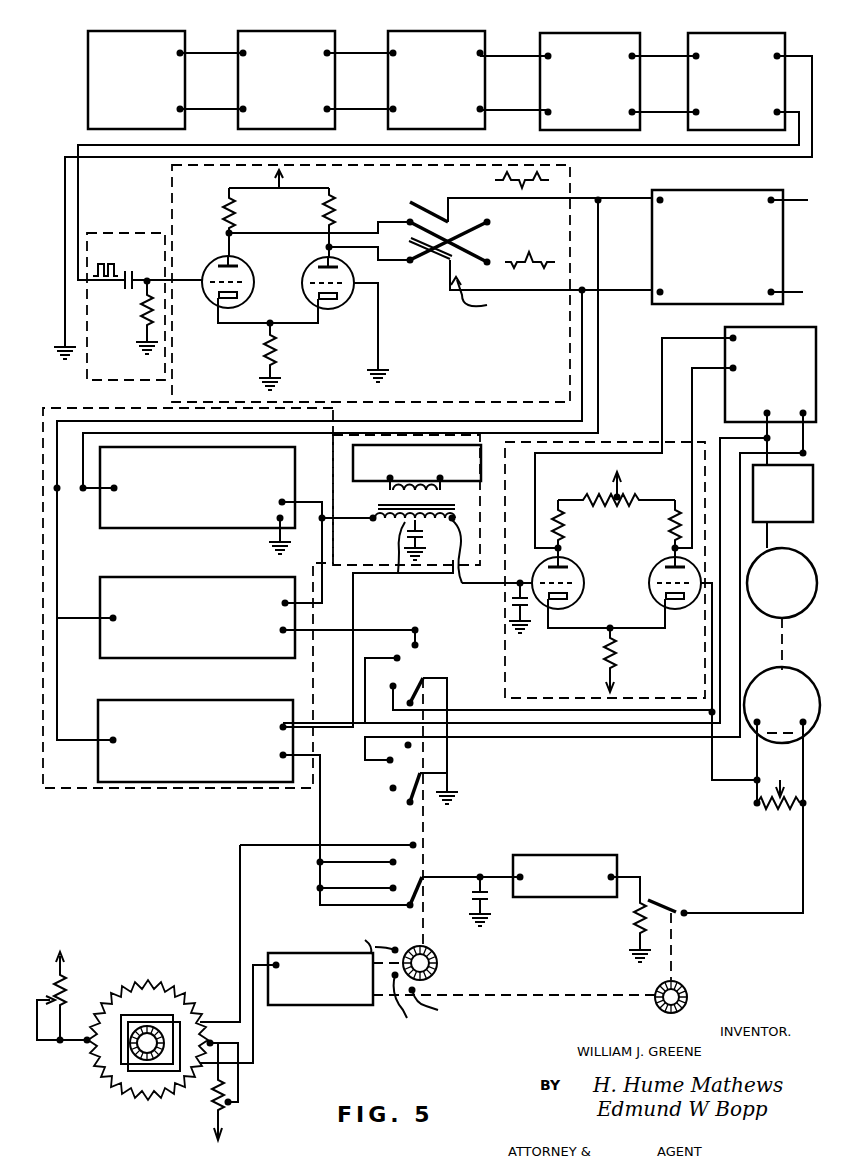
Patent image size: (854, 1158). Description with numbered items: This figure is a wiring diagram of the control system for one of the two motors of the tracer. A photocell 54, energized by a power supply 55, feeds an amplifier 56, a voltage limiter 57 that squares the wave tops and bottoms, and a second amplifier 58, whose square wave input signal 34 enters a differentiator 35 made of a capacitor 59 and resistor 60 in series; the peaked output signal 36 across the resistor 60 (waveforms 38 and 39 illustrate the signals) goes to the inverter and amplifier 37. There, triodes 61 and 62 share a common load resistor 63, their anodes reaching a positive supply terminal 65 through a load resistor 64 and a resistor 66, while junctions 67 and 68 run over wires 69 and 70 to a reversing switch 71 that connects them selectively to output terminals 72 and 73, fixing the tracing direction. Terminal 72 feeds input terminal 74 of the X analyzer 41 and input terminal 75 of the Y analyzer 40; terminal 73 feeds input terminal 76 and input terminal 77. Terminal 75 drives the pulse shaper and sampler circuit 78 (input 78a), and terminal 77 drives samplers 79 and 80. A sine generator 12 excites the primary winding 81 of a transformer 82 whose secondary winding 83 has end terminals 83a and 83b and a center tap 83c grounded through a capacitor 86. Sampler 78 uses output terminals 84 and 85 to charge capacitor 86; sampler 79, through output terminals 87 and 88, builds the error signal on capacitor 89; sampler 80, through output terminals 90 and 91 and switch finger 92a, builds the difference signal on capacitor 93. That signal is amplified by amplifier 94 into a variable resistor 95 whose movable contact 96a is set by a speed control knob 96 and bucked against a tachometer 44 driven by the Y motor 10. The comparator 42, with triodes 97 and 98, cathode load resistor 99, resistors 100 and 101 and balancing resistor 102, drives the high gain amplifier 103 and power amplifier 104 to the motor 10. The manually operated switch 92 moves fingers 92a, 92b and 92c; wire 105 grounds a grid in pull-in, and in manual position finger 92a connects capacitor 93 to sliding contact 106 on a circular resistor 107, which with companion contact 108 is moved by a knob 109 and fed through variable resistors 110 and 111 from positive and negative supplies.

The power supply 55 is at (163, 17).
The photocell 54 is at (290, 17).
The amplifier 56 is at (416, 17).
The voltage limiter 57 is at (590, 18).
The amplifier 58 is at (738, 18).
The differentiator 35 is at (145, 233).
The square wave input signal 34 is at (117, 262).
The capacitor 59 is at (122, 291).
The resistor 60 is at (135, 328).
The peaked output signal 36 is at (209, 275).
The triode 61 is at (246, 262).
The triode 62 is at (340, 330).
The common load resistor 63 is at (275, 348).
The load resistor 64 is at (235, 206).
The positive potential supply terminal 65 is at (283, 182).
The resistor 66 is at (334, 213).
The junction 67 is at (230, 233).
The junction 68 is at (332, 247).
The wire 69 is at (386, 216).
The wire 70 is at (395, 262).
The reversing switch 71 is at (469, 296).
The output terminal 72 is at (606, 199).
The output terminal 73 is at (579, 292).
The input terminal 74 is at (660, 200).
The input terminal 76 is at (664, 292).
The X analyzer 41 is at (662, 304).
The inverter and amplifier 37 is at (506, 402).
The waveform 38 is at (512, 180).
The waveform 39 is at (532, 250).
The high gain amplifier 103 is at (784, 324).
The comparator 42 is at (634, 450).
The sine generator 12 is at (481, 470).
The primary winding 81 is at (386, 492).
The transformer 82 is at (378, 506).
The secondary winding 83 is at (385, 524).
The end terminal 83a is at (370, 520).
The end terminal 83b is at (467, 562).
The center tap 83c is at (368, 624).
The capacitor 86 is at (434, 534).
The output terminal 84 is at (280, 502).
The output terminal 85 is at (280, 518).
The pulse shaper and sampler circuit 78 is at (298, 462).
The input terminal 78a is at (115, 488).
The input terminal 75 is at (82, 488).
The input terminal 77 is at (57, 488).
The pulse shaper and sampler circuit 79 is at (252, 578).
The output terminal 87 is at (284, 603).
The output terminal 88 is at (282, 630).
The pulse shaper and sampler circuit 80 is at (262, 700).
The output terminal 90 is at (280, 727).
The output terminal 91 is at (282, 756).
The Y analyzer 40 is at (250, 792).
The resistor 100 is at (564, 531).
The resistor 101 is at (672, 531).
The potentiometer 102 is at (638, 492).
The triode 97 is at (576, 560).
The triode 98 is at (655, 585).
The capacitor 89 is at (530, 615).
The cathode load resistor 99 is at (616, 653).
The power amplifier 104 is at (752, 526).
The Y motor 10 is at (780, 620).
The tachometer 44 is at (766, 746).
The wire 105 is at (484, 710).
The switch finger 92c is at (414, 672).
The switch finger 92b is at (408, 792).
The switch finger 92a is at (416, 907).
The manually operated switch 92 is at (445, 969).
The capacitor 93 is at (490, 894).
The amplifier 94 is at (566, 898).
The variable resistor 95 is at (626, 931).
The movable contact 96a is at (650, 910).
The speed control knob 96 is at (683, 985).
The sliding contact 106 is at (134, 998).
The circular resistor 107 is at (101, 1068).
The companion contact 108 is at (134, 1067).
The knob 109 is at (128, 1044).
The variable resistor 110 is at (61, 978).
The variable resistor 111 is at (224, 1114).